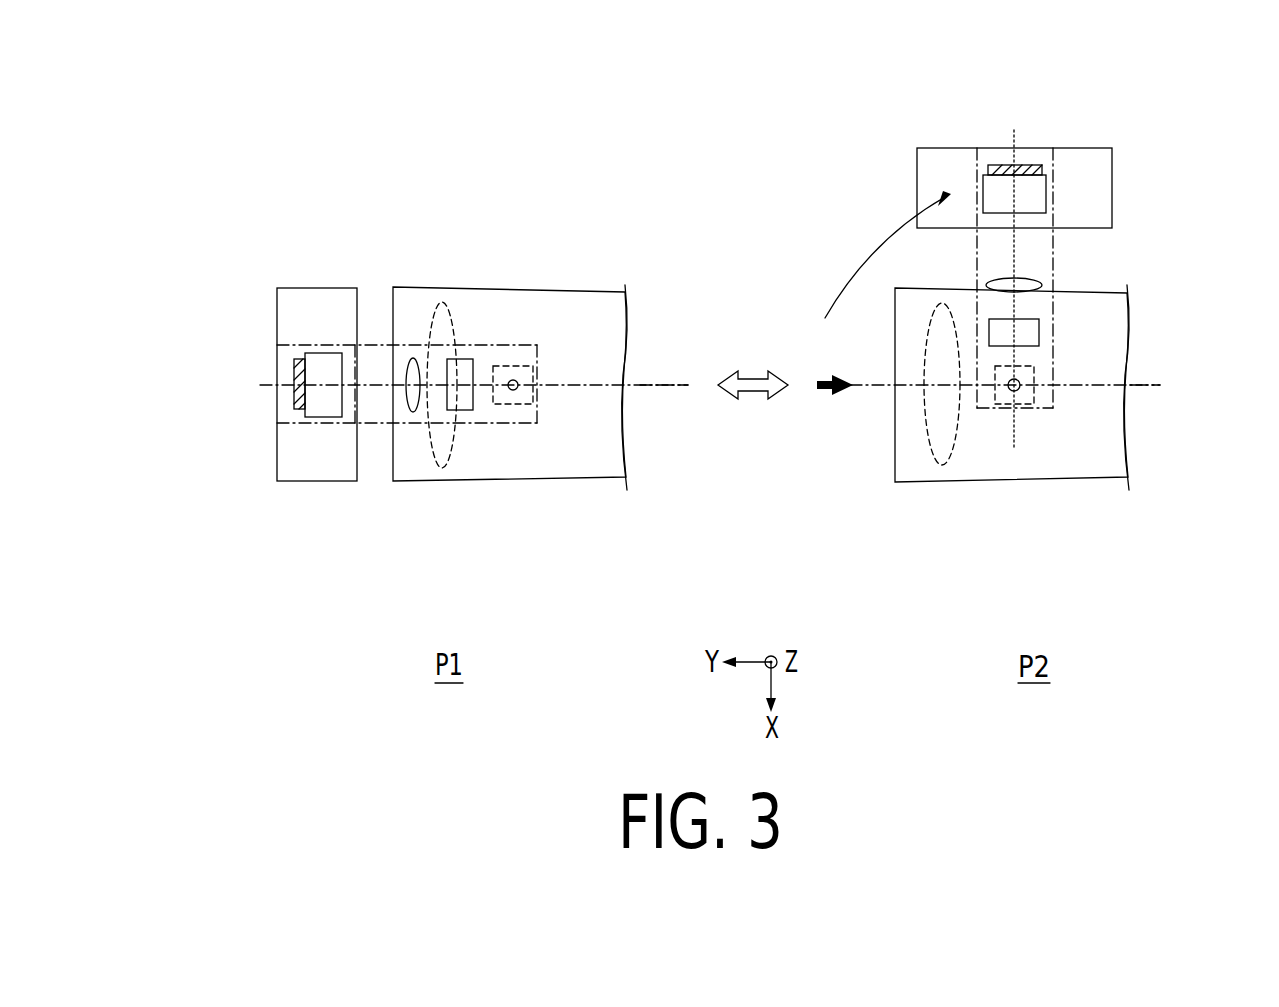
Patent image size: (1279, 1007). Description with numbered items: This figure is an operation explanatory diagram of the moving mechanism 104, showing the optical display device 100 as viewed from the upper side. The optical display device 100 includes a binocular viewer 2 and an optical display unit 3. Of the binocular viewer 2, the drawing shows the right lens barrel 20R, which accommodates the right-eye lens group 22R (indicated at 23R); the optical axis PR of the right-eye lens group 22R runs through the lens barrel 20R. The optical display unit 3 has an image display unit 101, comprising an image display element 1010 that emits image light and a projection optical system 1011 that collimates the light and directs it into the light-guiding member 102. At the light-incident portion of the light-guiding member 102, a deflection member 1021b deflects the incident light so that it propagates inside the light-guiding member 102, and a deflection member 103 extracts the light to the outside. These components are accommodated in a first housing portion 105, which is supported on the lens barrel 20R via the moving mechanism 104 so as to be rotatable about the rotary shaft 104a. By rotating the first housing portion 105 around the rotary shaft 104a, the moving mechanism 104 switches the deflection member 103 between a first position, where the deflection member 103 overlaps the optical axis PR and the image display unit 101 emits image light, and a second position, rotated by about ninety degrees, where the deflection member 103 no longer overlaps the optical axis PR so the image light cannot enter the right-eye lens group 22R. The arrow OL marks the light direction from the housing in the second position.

The optical display device 100 is at (556, 240).
The binocular viewer 2 is at (494, 282).
The optical display unit 3 is at (305, 279).
The lens barrel 20R is at (528, 480).
The right opening 23R is at (425, 325).
The right-eye lens group 22R is at (649, 395).
The image display unit 101 is at (478, 572).
The image display element 1010 is at (464, 412).
The projection optical system 1011 is at (410, 399).
The light-guiding member 102 is at (320, 414).
The deflection member 1021b is at (297, 370).
The deflection member 103 is at (596, 225).
The moving mechanism 104 is at (765, 474).
The rotary shaft 104a is at (519, 387).
The first housing portion 105 is at (300, 470).
The optical axis PR is at (668, 385).
The optical axis of light OL is at (822, 392).